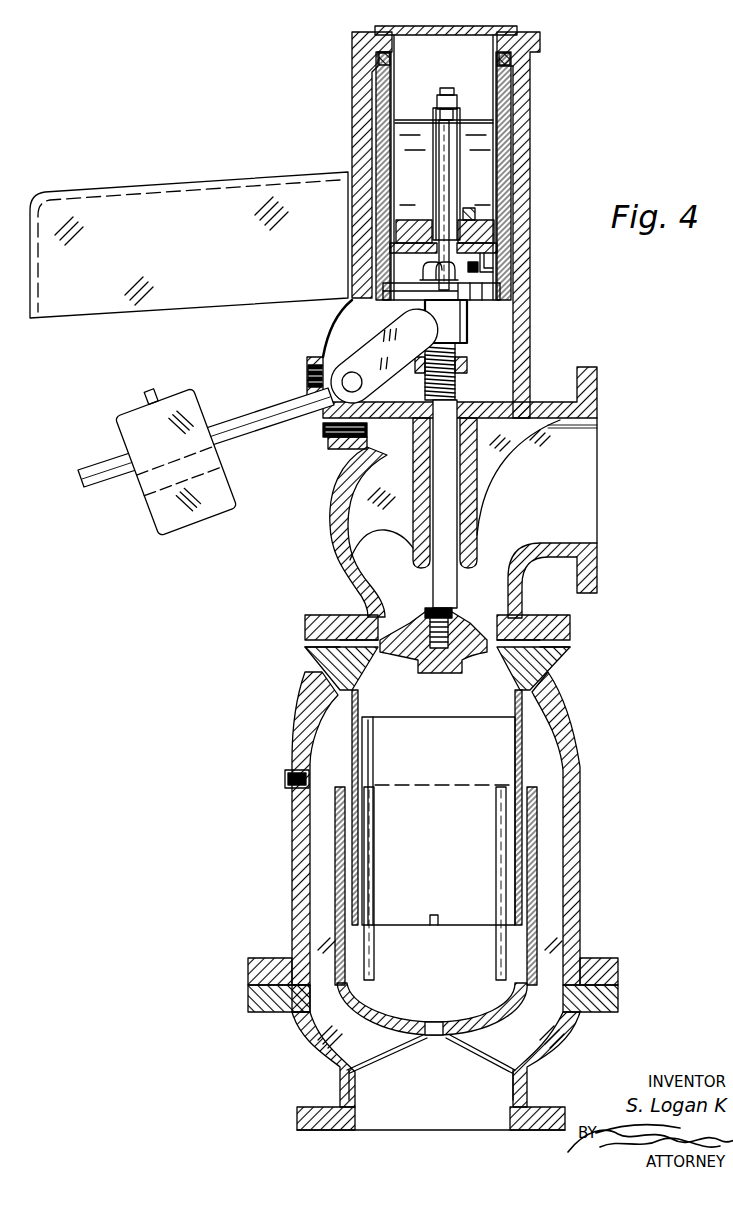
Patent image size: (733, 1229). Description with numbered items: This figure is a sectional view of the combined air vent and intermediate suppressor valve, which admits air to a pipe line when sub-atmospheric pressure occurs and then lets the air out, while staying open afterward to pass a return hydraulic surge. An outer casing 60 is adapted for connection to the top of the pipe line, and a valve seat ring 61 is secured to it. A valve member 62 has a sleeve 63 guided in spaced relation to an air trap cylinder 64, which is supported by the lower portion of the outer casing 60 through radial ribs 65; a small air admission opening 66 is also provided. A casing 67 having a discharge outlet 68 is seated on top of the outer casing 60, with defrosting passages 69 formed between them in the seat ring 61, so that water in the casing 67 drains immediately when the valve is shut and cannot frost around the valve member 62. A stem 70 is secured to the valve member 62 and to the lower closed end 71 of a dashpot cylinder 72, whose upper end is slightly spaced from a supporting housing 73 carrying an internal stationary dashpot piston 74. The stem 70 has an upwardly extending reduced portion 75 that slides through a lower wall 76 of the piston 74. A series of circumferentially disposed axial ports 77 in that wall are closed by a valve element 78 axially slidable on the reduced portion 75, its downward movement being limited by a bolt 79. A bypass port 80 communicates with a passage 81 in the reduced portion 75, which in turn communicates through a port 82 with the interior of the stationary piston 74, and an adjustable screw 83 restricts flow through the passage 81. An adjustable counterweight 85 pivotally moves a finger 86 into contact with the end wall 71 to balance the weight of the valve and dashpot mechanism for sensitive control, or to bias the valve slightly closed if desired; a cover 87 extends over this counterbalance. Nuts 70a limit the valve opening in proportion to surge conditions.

The outer casing 60 is at (572, 846).
The valve seat ring 61 is at (350, 657).
The valve member 62 is at (476, 624).
The sleeve 63 is at (362, 764).
The air trap cylinder 64 is at (537, 887).
The radial ribs 65 is at (368, 1048).
The air admission opening 66 is at (437, 1022).
The casing 67 is at (545, 410).
The discharge outlet 68 is at (578, 493).
The defrosting passages 69 is at (545, 650).
The stem 70 is at (462, 390).
The nuts 70a is at (482, 360).
The lower closed end 71 is at (478, 300).
The dashpot cylinder 72 is at (490, 230).
The supporting housing 73 is at (527, 156).
The stationary dashpot piston 74 is at (490, 97).
The reduced portion 75 is at (450, 180).
The lower wall 76 is at (463, 226).
The axial ports 77 is at (487, 263).
The valve element 78 is at (478, 265).
The bolt 79 is at (500, 285).
The bypass port 80 is at (440, 267).
The passage 81 is at (437, 186).
The port 82 is at (446, 160).
The adjustable screw 83 is at (452, 90).
The adjustable counterweight 85 is at (192, 388).
The finger 86 is at (392, 360).
The cover 87 is at (110, 305).